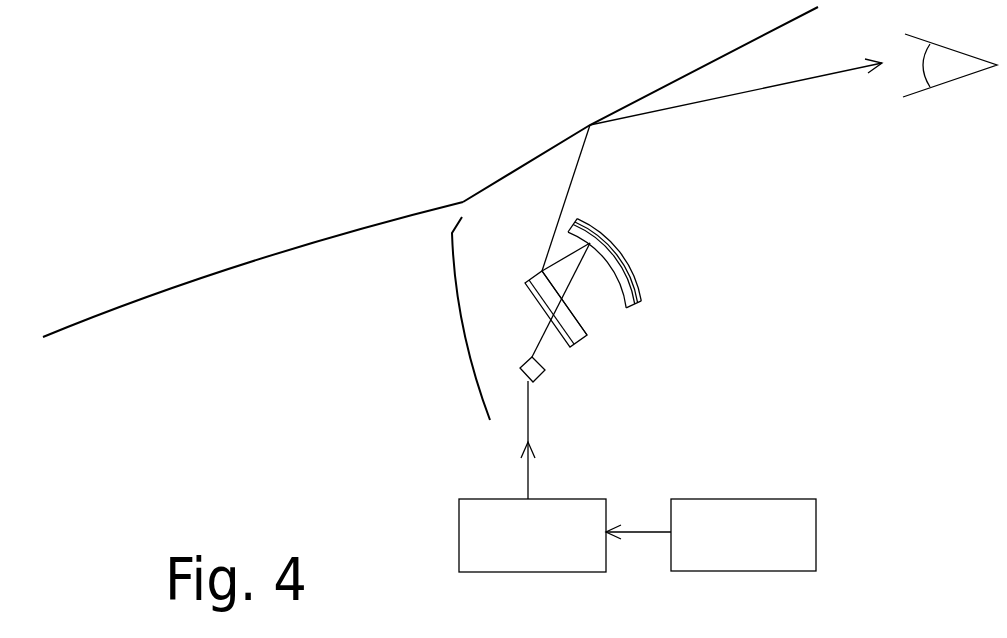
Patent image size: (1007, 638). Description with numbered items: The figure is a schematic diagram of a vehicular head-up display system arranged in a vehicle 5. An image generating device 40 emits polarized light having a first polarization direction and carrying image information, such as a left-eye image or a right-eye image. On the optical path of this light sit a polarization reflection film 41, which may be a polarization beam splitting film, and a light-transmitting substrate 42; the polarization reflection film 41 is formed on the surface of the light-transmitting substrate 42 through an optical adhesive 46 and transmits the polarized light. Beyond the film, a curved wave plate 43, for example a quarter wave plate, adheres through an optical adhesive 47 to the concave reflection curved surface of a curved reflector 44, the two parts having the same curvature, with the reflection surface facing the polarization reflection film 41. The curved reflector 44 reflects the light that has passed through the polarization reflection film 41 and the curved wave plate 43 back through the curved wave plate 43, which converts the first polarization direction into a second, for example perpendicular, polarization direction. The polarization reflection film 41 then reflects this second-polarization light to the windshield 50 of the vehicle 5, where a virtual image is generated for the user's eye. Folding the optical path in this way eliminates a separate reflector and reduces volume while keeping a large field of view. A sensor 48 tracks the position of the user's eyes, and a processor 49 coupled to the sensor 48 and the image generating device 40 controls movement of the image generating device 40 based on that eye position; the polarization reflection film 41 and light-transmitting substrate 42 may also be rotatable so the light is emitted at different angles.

The vehicle 5 is at (225, 288).
The windshield 50 is at (587, 140).
The image generating device 40 is at (537, 383).
The polarization reflection film 41 is at (549, 308).
The light-transmitting substrate 42 is at (527, 290).
The optical adhesive 46 is at (578, 347).
The curved reflector 44 is at (627, 280).
The optical adhesive 47 is at (637, 291).
The curved wave plate 43 is at (632, 310).
The sensor 48 is at (816, 513).
The processor 49 is at (459, 515).